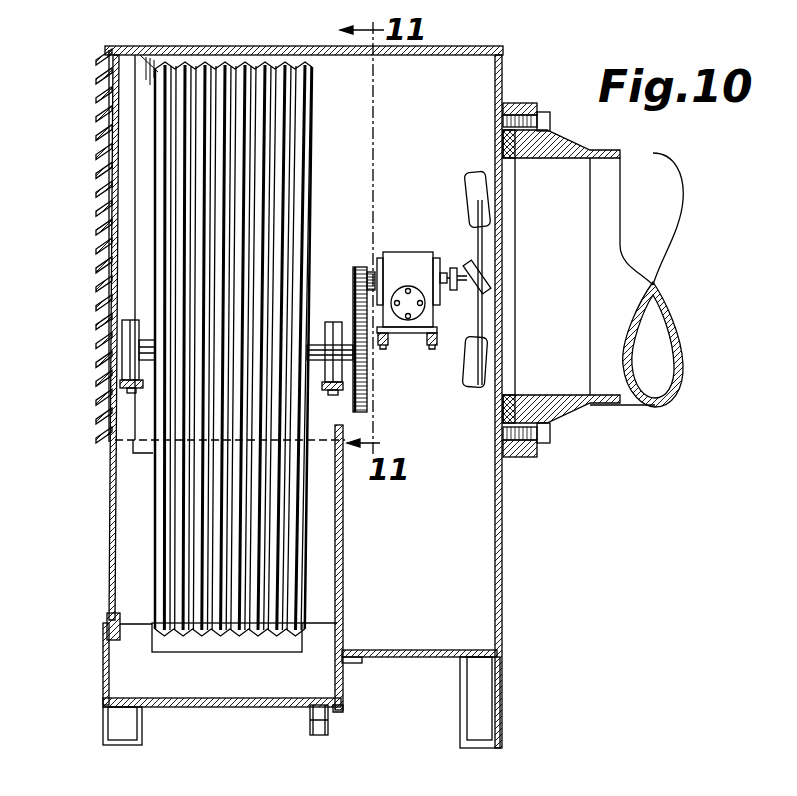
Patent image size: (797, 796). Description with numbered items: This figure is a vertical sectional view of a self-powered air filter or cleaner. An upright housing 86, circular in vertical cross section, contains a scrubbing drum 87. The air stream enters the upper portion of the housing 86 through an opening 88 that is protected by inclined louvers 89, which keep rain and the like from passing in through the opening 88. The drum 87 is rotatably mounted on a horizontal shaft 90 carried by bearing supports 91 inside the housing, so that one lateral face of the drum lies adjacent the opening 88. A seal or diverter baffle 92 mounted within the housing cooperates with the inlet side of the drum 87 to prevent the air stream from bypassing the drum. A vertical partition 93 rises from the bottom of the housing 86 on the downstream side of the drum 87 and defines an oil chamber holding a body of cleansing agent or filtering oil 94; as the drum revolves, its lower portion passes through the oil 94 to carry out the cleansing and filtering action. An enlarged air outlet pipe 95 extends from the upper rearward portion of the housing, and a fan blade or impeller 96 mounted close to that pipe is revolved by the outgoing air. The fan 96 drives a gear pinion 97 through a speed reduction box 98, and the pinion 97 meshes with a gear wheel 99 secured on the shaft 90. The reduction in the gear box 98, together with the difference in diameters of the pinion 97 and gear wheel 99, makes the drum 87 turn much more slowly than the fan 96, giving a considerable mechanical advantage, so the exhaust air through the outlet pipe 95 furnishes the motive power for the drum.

The housing 86 is at (107, 575).
The scrubbing drum 87 is at (285, 152).
The opening 88 is at (100, 236).
The inclined louvers 89 is at (100, 125).
The horizontal shaft 90 is at (322, 348).
The bearing supports 91 is at (120, 348).
The diverter baffle 92 is at (160, 58).
The vertical partition 93 is at (345, 515).
The filtering oil 94 is at (320, 598).
The air outlet pipe 95 is at (625, 400).
The fan blade 96 is at (478, 180).
The gear pinion 97 is at (367, 275).
The speed reduction box 98 is at (418, 258).
The gear wheel 99 is at (365, 400).